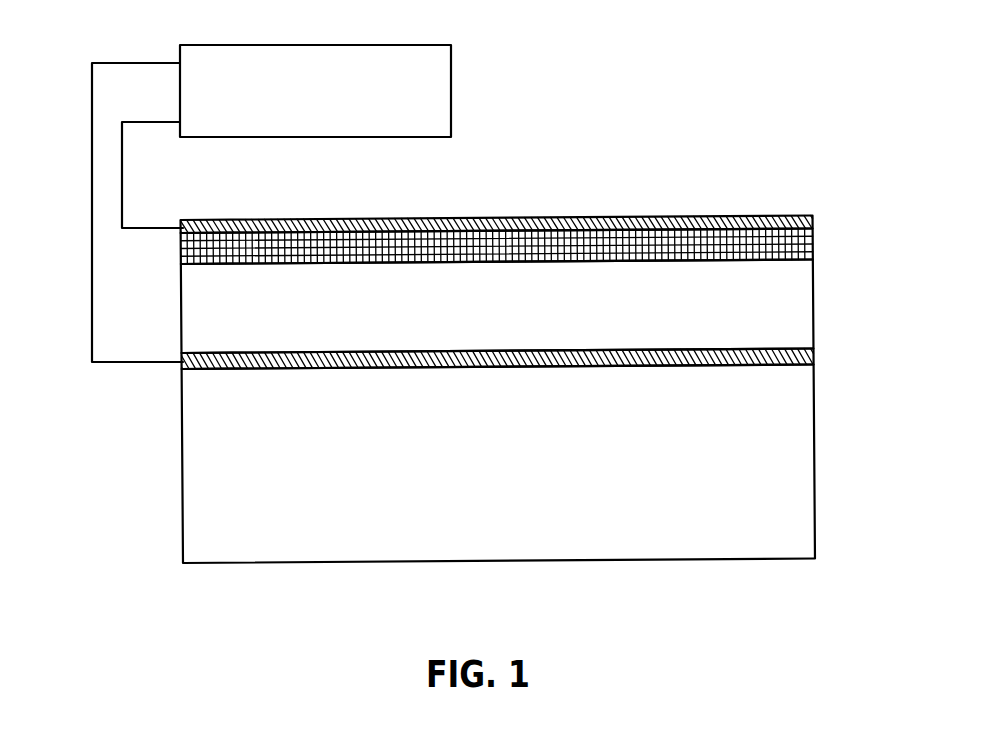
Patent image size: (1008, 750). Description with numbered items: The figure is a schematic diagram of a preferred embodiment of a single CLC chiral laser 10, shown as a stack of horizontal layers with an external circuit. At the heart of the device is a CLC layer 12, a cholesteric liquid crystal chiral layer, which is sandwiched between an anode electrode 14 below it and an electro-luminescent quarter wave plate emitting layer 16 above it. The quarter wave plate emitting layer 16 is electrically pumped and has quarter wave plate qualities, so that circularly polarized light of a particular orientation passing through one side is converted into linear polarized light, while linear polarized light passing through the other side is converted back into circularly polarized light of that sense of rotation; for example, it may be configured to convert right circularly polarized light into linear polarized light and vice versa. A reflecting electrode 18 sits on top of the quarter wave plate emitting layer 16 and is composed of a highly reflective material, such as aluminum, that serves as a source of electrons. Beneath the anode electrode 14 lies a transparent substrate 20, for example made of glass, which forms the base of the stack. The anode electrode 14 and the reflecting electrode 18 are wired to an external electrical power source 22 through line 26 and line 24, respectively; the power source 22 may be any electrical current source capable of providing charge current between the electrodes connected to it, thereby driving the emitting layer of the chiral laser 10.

The chiral laser 10 is at (660, 133).
The CLC layer 12 is at (815, 316).
The anode electrode 14 is at (815, 361).
The quarter wave plate emitting layer 16 is at (815, 247).
The reflecting electrode 18 is at (760, 218).
The transparent substrate 20 is at (183, 468).
The external electrical power source 22 is at (451, 83).
The line 24 is at (122, 193).
The line 26 is at (150, 363).